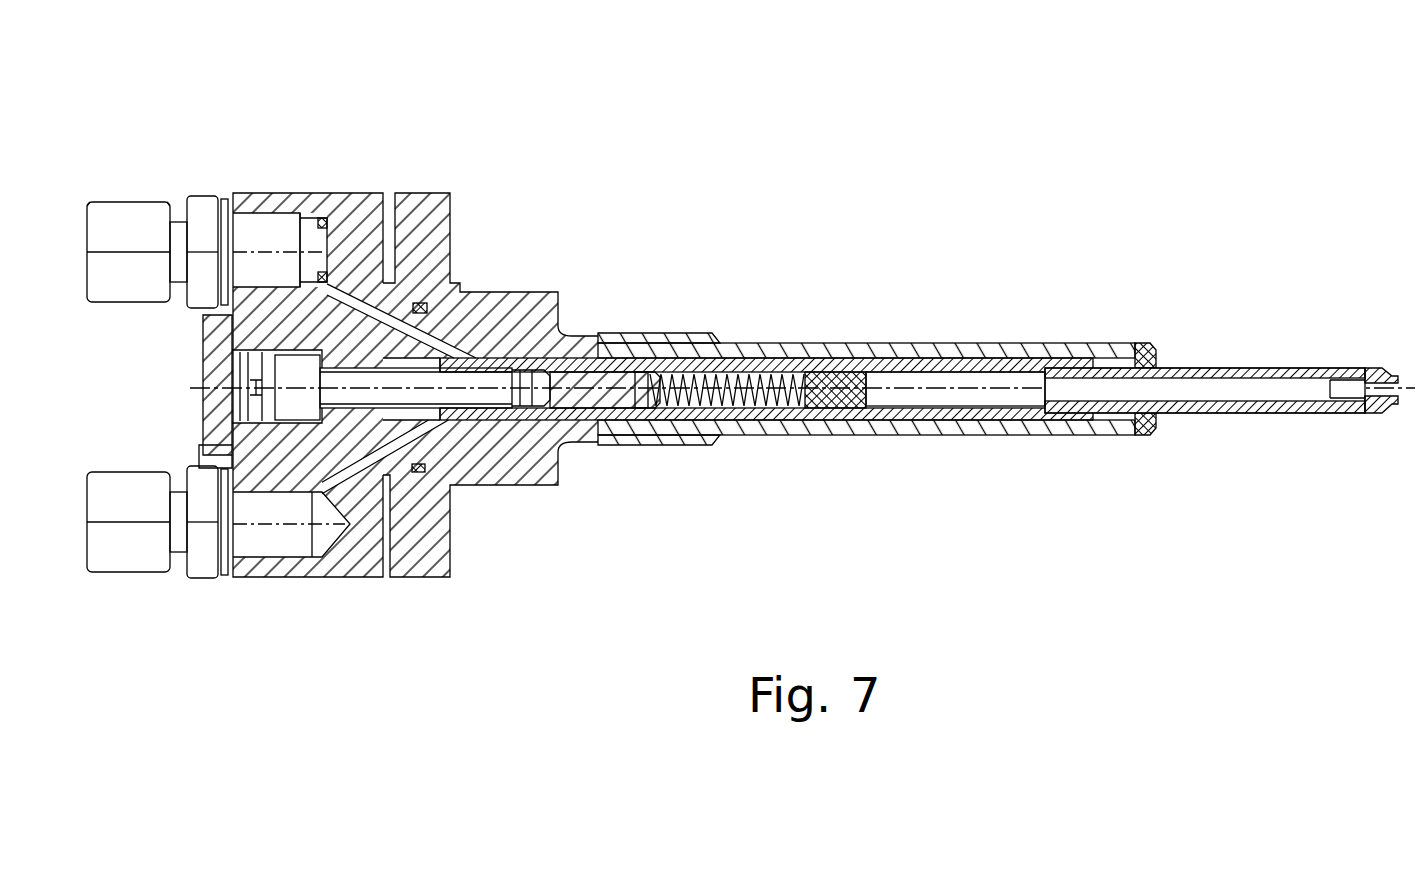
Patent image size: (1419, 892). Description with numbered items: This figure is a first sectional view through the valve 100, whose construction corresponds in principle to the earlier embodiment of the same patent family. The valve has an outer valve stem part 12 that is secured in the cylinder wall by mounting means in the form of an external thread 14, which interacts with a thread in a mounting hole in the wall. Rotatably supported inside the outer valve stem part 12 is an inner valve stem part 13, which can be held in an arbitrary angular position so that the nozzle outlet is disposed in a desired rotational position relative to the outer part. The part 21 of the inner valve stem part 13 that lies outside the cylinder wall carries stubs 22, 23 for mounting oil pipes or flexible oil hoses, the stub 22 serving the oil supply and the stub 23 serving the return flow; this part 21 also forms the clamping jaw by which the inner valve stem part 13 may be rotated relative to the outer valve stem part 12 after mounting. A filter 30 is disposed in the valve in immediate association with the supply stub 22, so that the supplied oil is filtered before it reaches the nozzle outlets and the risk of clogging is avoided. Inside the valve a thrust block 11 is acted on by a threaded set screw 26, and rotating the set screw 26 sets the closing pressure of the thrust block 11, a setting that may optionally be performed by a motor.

The valve 100 is at (741, 179).
The thrust block 11 is at (585, 400).
The outer valve stem part 12 is at (528, 296).
The inner valve stem part 13 is at (992, 357).
The external thread 14 is at (654, 333).
The part provided outside the cylinder wall 21 is at (285, 173).
The stub 22 is at (123, 200).
The stub 23 is at (118, 478).
The set screw 26 is at (352, 397).
The filter 30 is at (318, 240).